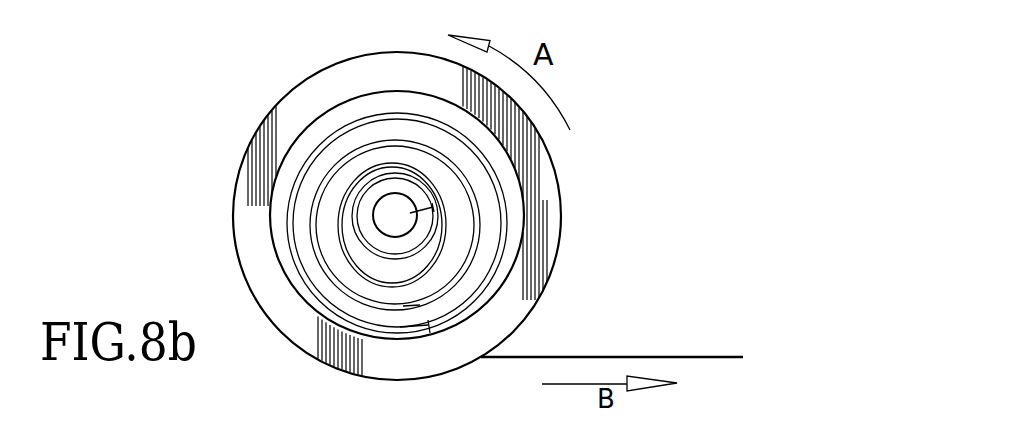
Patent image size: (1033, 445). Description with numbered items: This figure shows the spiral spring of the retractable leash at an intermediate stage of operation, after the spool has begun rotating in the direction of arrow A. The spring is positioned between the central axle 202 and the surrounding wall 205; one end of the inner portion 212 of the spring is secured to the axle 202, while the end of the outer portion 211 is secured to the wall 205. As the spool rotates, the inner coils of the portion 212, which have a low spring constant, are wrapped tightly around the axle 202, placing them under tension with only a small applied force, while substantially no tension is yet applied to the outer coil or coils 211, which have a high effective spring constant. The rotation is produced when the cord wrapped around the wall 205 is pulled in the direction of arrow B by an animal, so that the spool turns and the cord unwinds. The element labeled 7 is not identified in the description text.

The wall 205 is at (553, 204).
The outer coil or coils of the spring 211 is at (298, 247).
The inner portion of the spring 212 is at (322, 218).
The axle 202 is at (408, 222).
The tape 7 is at (611, 357).